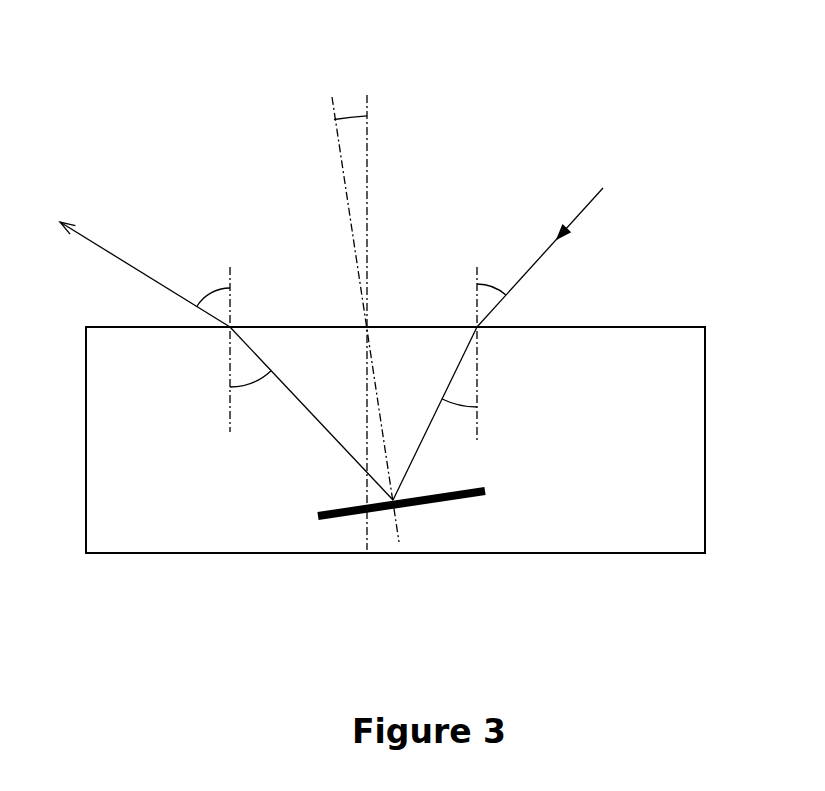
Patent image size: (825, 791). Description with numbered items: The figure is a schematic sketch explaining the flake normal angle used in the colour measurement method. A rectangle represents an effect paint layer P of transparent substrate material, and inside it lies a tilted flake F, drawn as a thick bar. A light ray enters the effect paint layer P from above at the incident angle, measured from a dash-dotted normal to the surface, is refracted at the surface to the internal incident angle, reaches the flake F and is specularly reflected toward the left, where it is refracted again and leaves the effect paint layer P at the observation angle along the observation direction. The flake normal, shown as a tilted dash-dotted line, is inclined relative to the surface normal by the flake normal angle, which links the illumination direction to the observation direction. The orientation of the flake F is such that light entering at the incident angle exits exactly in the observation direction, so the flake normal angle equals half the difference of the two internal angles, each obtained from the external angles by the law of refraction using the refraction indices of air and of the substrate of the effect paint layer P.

The effect paint layer P is at (687, 465).
The flake F is at (458, 502).